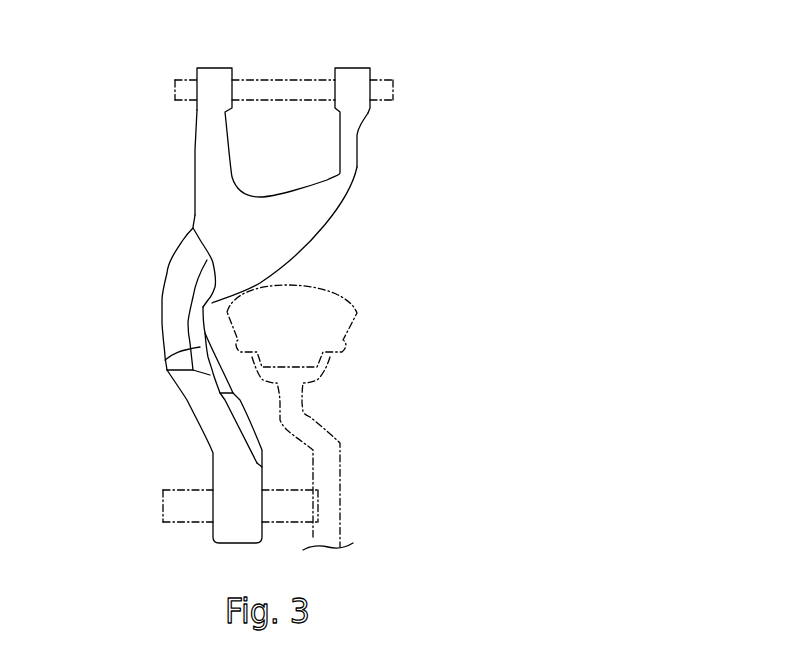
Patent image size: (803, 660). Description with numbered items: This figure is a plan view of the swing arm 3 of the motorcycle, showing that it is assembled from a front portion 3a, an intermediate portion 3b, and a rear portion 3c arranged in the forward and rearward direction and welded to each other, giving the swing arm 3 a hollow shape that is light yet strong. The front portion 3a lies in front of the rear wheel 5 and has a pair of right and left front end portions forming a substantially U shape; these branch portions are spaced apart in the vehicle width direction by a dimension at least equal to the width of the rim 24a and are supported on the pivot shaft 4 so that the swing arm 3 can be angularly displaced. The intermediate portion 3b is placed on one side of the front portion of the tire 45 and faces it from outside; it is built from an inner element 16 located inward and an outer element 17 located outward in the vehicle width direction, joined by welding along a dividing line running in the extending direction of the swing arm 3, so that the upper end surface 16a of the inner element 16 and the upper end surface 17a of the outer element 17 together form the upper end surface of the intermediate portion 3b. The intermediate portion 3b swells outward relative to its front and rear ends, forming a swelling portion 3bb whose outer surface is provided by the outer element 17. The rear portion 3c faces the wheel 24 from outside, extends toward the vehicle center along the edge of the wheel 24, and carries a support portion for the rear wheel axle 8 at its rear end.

The swing arm 3 is at (243, 305).
The front portion 3a is at (205, 162).
The intermediate portion 3b is at (192, 317).
The swelling portion 3bb is at (160, 330).
The rear portion 3c is at (213, 457).
The pivot shaft 4 is at (393, 90).
The rear wheel 5 is at (373, 318).
The rear wheel axle 8 is at (163, 509).
The inner element 16 is at (190, 310).
The upper end surface of the inner element 16a is at (168, 370).
The outer element 17 is at (185, 272).
The upper end surface of the outer element 17a is at (192, 252).
The wheel 24 is at (347, 467).
The rim 24a is at (347, 347).
The tire 45 is at (353, 304).